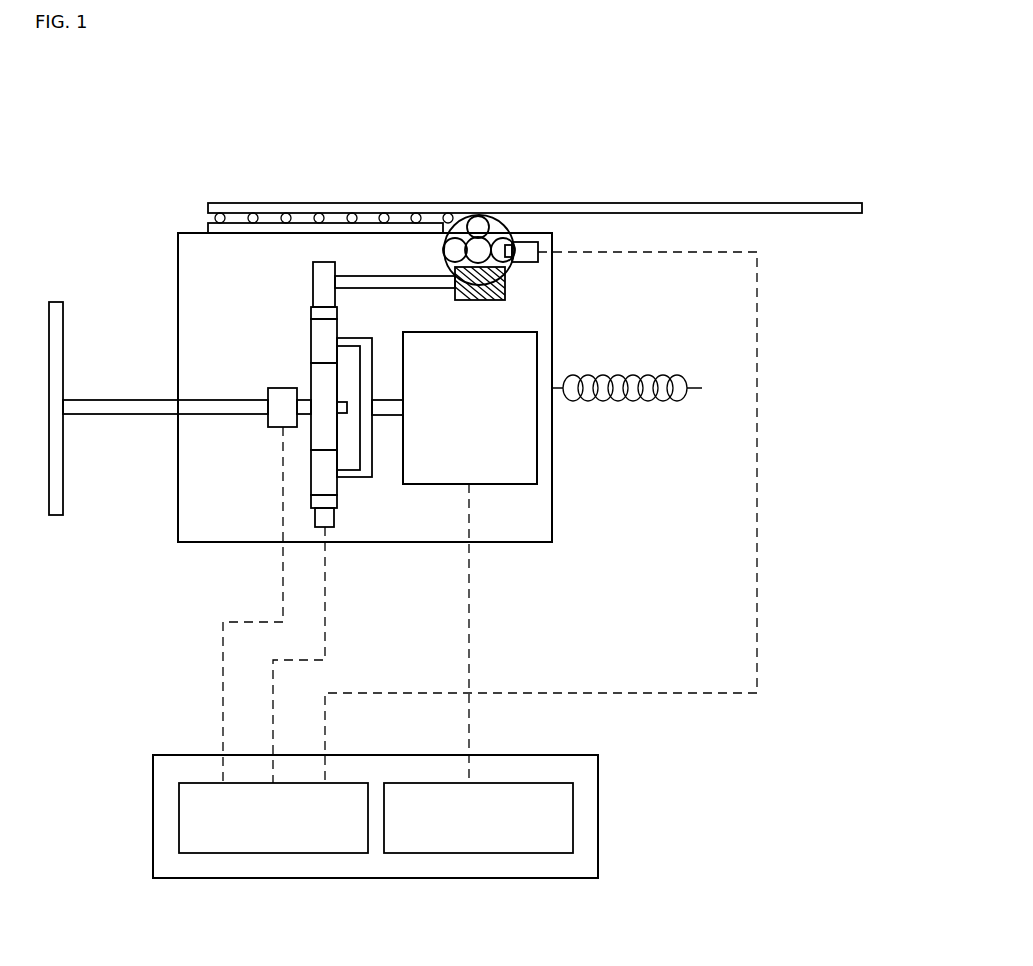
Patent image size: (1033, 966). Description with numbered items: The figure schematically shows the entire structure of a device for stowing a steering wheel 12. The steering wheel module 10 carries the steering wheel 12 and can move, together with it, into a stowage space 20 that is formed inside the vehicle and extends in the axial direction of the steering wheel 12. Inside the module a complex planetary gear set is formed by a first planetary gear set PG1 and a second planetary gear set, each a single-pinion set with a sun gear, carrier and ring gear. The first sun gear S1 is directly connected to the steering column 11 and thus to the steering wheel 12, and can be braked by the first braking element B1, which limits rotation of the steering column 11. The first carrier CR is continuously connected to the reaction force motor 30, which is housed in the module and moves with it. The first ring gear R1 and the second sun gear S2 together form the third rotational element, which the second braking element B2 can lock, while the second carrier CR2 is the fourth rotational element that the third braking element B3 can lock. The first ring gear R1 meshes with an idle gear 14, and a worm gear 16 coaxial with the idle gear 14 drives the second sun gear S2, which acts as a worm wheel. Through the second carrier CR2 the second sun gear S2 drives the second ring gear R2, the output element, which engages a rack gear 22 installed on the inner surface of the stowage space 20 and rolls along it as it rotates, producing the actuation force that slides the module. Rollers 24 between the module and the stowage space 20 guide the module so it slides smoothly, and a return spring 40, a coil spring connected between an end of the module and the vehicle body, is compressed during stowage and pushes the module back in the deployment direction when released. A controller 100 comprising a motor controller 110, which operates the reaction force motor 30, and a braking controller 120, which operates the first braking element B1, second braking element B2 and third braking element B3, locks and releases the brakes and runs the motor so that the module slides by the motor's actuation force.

The steering wheel module 10 is at (556, 350).
The steering column 11 is at (112, 408).
The steering wheel 12 is at (55, 510).
The idle gear 14 is at (327, 268).
The worm gear 16 is at (505, 285).
The stowage space 20 is at (820, 428).
The rack gear 22 is at (727, 203).
The rollers 24 is at (287, 219).
The reaction force motor 30 is at (530, 455).
The return spring 40 is at (677, 402).
The controller 100 is at (598, 812).
The motor controller 110 is at (480, 853).
The braking controller 120 is at (274, 853).
The first ring gear R1 is at (317, 312).
The first carrier CR is at (317, 343).
The first sun gear S1 is at (317, 442).
The first braking element B1 is at (283, 425).
The second braking element B2 is at (333, 525).
The first planetary gear set PG1 is at (339, 503).
The second sun gear S2 is at (470, 243).
The second carrier CR2 is at (478, 225).
The second ring gear R2 is at (500, 227).
The third braking element B3 is at (535, 243).